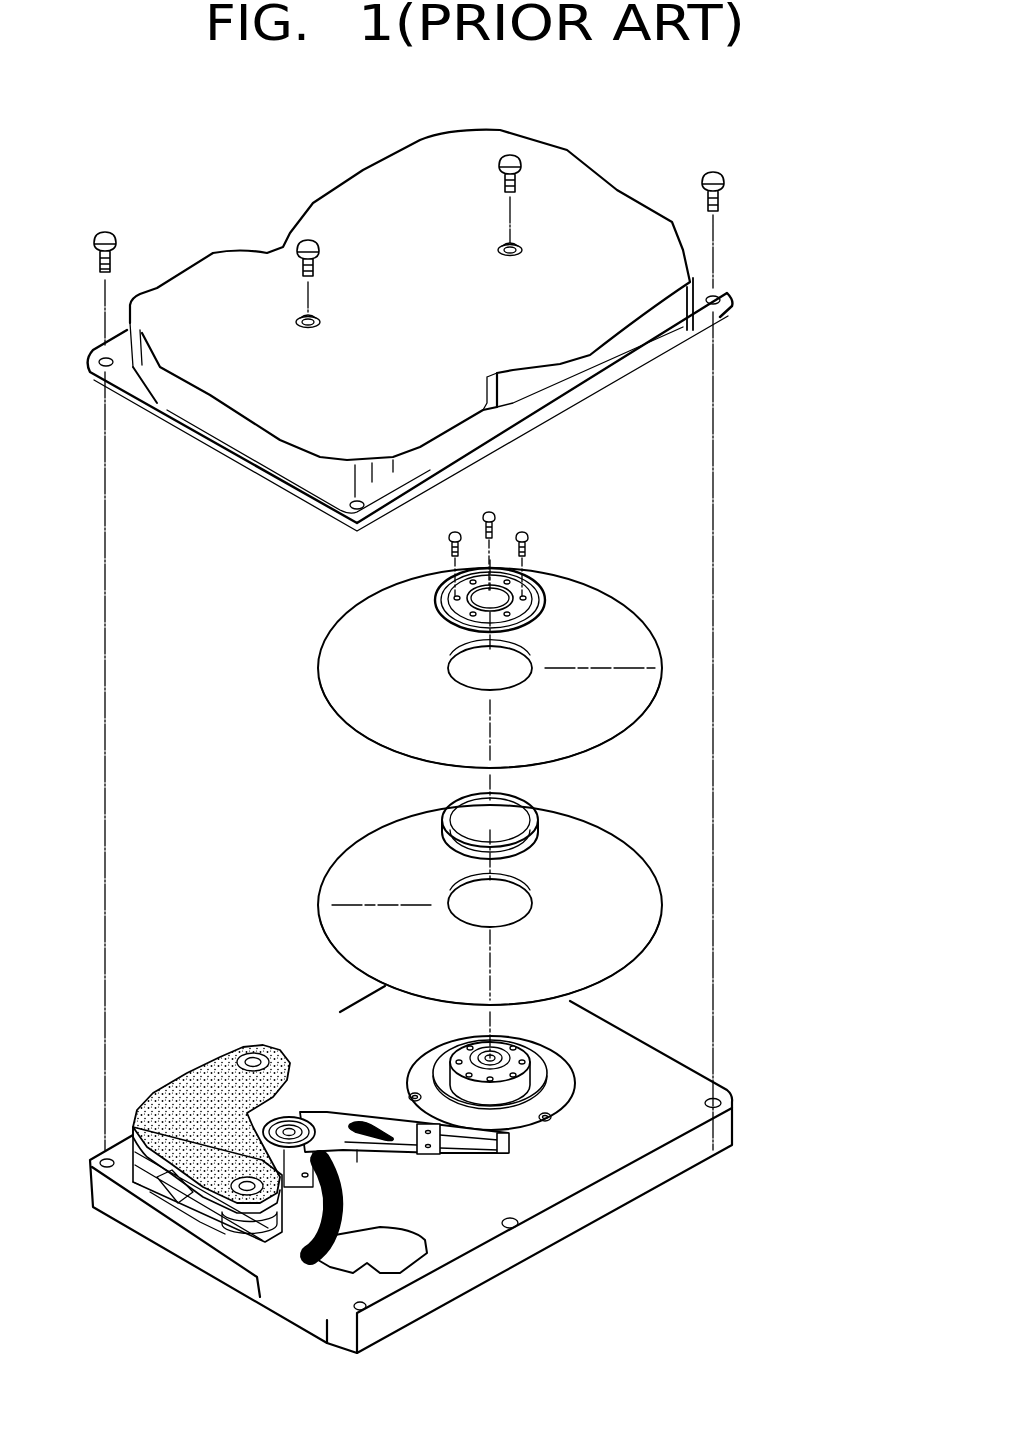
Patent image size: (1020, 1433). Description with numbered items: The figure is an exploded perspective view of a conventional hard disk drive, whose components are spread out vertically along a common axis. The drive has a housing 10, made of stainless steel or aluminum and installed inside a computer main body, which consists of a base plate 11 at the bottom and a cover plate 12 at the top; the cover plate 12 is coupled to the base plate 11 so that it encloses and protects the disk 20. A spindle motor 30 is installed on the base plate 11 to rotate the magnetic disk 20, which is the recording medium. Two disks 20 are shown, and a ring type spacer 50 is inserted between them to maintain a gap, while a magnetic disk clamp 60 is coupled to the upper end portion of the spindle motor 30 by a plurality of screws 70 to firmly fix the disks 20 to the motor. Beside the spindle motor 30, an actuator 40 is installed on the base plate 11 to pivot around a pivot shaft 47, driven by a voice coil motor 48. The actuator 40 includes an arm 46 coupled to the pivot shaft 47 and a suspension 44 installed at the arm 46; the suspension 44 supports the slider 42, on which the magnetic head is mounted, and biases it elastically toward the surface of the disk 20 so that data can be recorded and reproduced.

The housing 10 is at (815, 375).
The base plate 11 is at (700, 1088).
The cover plate 12 is at (735, 325).
The magnetic disk 20 is at (622, 612).
The spindle motor 30 is at (440, 1048).
The actuator 40 is at (315, 1088).
The slider 42 is at (510, 1145).
The suspension 44 is at (453, 1140).
The arm 46 is at (372, 1150).
The pivot shaft 47 is at (237, 1060).
The voice coil motor 48 is at (200, 1200).
The ring type spacer 50 is at (532, 805).
The magnetic disk clamp 60 is at (545, 555).
The screws 70 is at (500, 512).